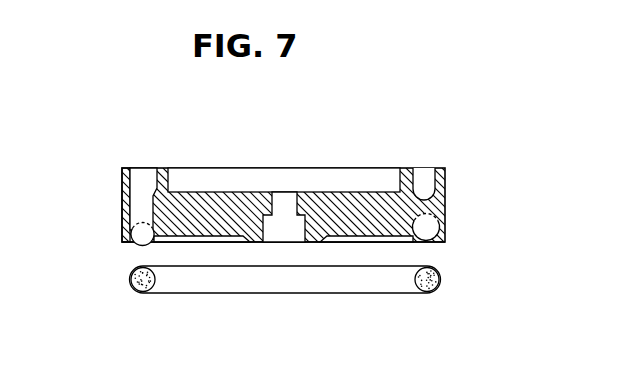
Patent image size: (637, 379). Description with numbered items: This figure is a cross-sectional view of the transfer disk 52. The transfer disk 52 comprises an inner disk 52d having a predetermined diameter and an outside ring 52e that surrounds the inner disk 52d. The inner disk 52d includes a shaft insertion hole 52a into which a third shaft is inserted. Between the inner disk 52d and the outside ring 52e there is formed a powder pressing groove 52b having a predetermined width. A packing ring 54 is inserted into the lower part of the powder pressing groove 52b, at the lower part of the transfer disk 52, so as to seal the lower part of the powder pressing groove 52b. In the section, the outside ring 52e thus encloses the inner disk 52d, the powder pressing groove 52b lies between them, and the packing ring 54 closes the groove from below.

The transfer disk 52 is at (112, 209).
The shaft insertion hole 52a is at (285, 228).
The powder pressing groove 52b is at (139, 194).
The inner disk 52d is at (407, 210).
The outside ring 52e is at (116, 186).
The packing ring 54 is at (143, 245).